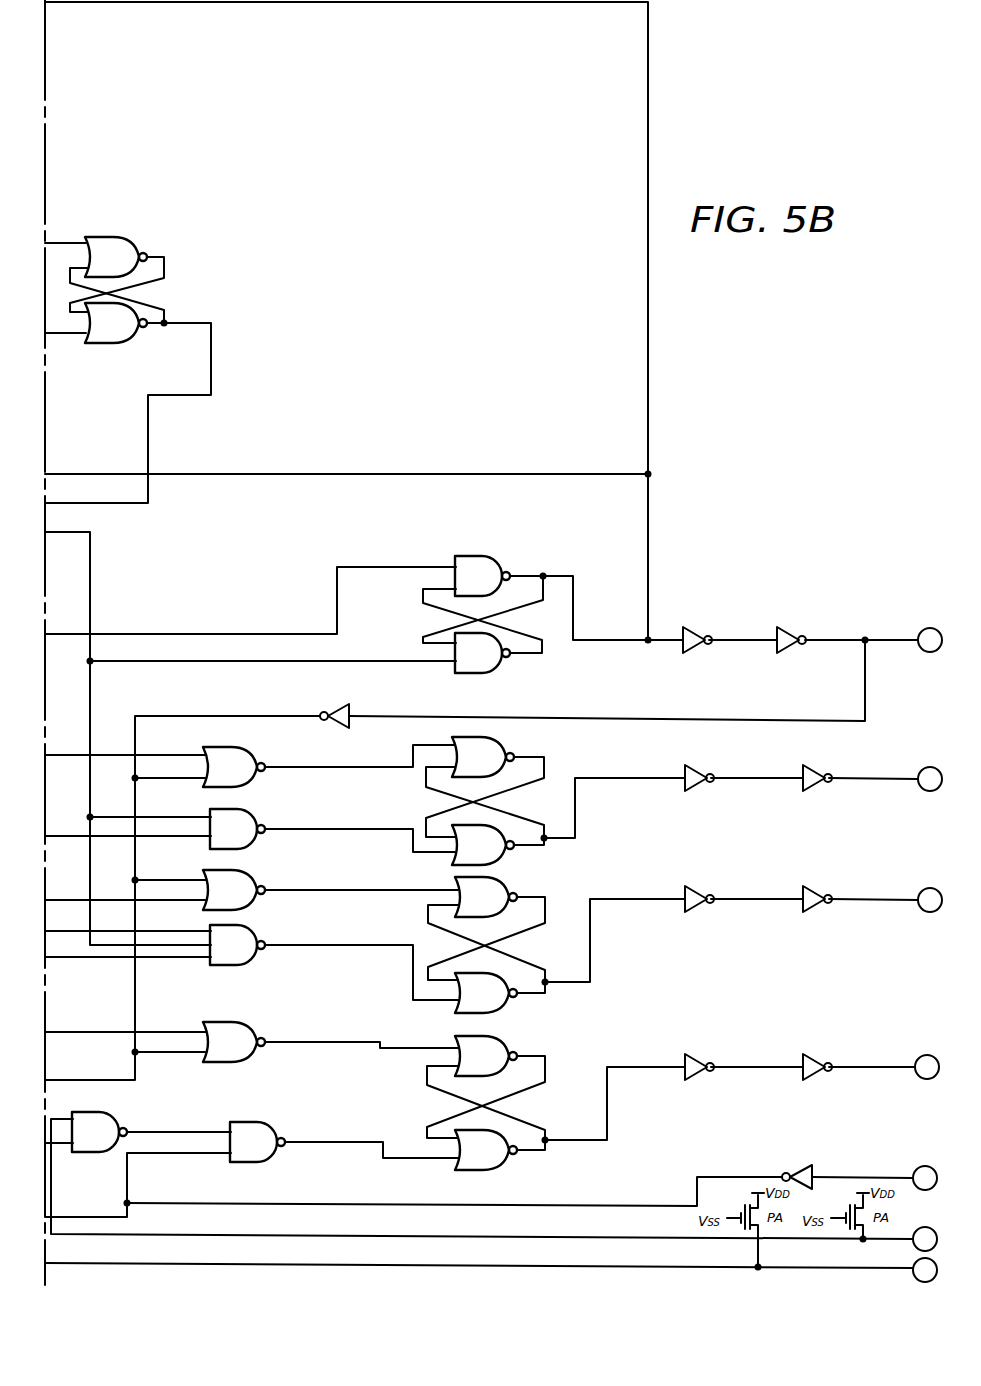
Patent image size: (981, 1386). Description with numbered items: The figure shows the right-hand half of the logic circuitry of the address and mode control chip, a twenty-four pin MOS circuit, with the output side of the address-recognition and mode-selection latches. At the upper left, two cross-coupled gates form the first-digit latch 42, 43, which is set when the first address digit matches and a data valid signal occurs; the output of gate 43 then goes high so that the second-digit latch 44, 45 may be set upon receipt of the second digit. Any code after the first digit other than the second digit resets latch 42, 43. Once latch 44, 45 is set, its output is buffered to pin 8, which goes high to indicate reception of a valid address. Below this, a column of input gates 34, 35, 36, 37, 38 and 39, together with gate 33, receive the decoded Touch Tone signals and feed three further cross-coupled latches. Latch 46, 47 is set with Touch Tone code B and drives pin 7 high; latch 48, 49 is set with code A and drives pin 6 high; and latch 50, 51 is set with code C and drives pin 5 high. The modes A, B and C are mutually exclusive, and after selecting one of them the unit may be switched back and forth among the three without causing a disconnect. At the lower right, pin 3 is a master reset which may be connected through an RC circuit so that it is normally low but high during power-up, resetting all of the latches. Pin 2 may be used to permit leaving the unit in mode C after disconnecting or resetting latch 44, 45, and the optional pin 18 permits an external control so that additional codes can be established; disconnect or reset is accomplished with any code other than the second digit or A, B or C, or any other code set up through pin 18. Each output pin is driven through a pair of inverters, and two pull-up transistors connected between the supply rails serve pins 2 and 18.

The latch gate 42 is at (118, 268).
The latch gate 43 is at (118, 334).
The latch gate 44 is at (481, 588).
The latch gate 45 is at (481, 665).
The latch gate 46 is at (483, 768).
The latch gate 47 is at (483, 856).
The latch gate 48 is at (486, 908).
The latch gate 49 is at (486, 1004).
The latch gate 50 is at (486, 1067).
The latch gate 51 is at (486, 1161).
The gate 33 is at (97, 1144).
The gate 34 is at (234, 778).
The gate 35 is at (235, 841).
The gate 36 is at (234, 901).
The gate 37 is at (235, 956).
The gate 38 is at (234, 1053).
The gate 39 is at (255, 1154).
The pin 8 is at (930, 630).
The pin 7 is at (940, 752).
The pin 6 is at (941, 871).
The pin 5 is at (940, 1040).
The pin 3 is at (928, 1170).
The pin 2 is at (939, 1213).
The pin 18 is at (924, 1283).